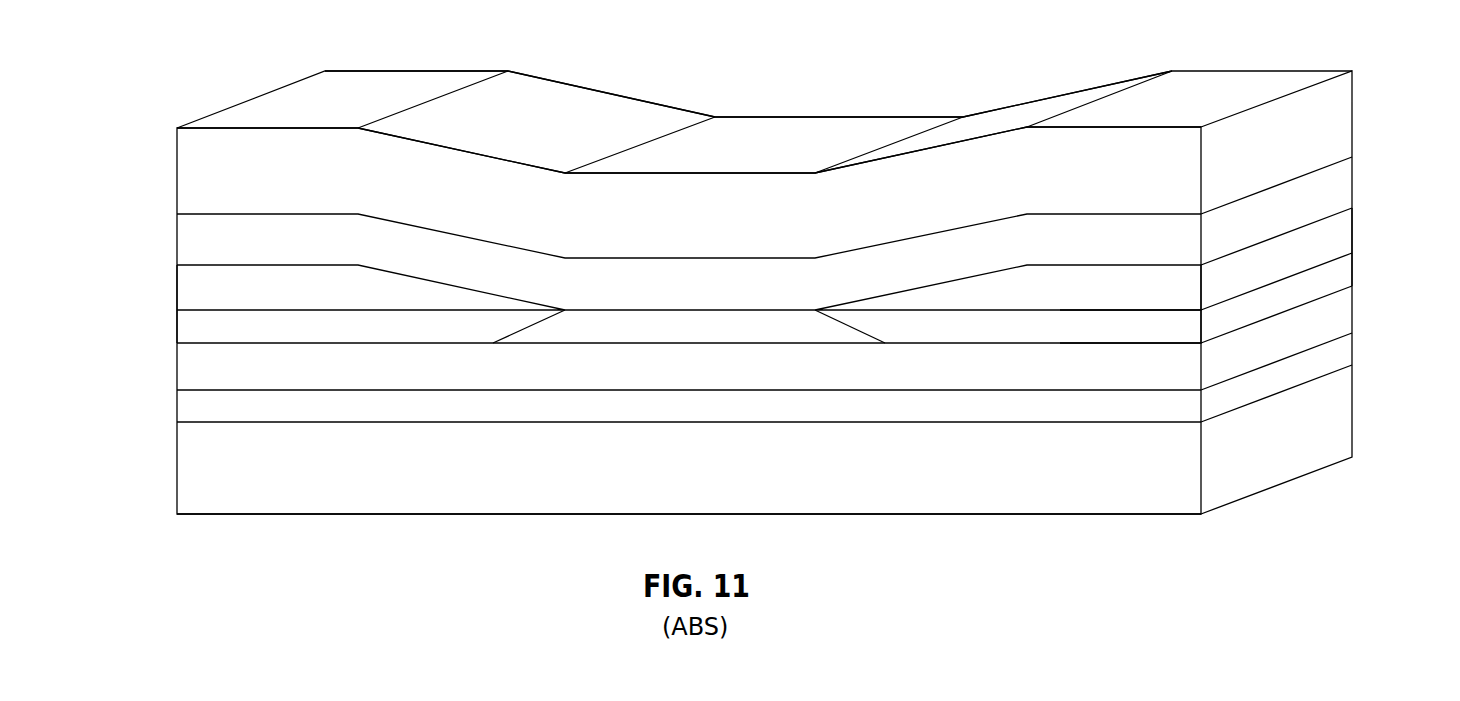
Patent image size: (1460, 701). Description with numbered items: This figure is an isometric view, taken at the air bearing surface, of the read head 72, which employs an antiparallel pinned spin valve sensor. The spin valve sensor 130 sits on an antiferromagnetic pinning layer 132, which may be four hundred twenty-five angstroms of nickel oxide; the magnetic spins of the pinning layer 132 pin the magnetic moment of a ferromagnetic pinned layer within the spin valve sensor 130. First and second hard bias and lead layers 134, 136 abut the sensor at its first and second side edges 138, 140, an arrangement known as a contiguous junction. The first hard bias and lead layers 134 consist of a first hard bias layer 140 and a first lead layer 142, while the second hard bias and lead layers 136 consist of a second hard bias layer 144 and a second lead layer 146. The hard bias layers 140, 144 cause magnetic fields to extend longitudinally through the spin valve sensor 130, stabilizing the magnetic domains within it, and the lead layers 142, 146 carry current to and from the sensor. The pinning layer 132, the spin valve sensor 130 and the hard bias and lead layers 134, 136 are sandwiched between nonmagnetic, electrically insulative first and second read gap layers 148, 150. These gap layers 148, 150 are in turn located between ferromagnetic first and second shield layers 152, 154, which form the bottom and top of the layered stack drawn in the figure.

The read head 72 is at (842, 84).
The spin valve sensor 130 is at (599, 303).
The antiferromagnetic pinning layer 132 is at (883, 372).
The first hard bias and lead layers 134 is at (175, 265).
The second hard bias and lead layers 136 is at (1360, 205).
The first side edge 138 is at (508, 334).
The first hard bias layer 140 is at (220, 326).
The first lead layer 142 is at (220, 277).
The second hard bias layer 144 is at (1148, 325).
The second lead layer 146 is at (1150, 277).
The first read gap layer 148 is at (463, 410).
The second read gap layer 150 is at (423, 245).
The first shield layer 152 is at (350, 495).
The second shield layer 154 is at (617, 105).